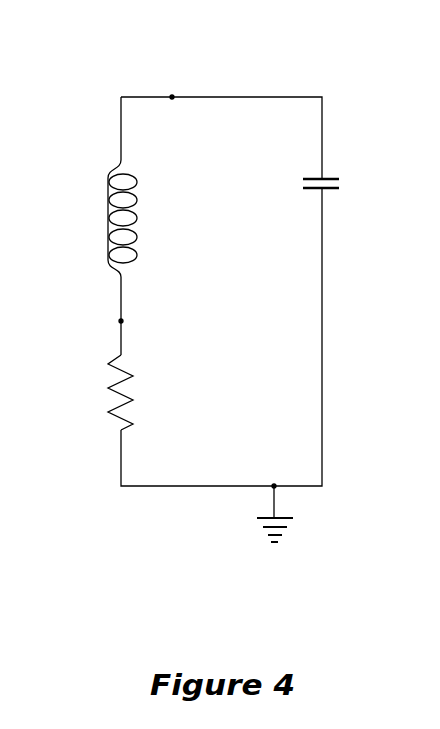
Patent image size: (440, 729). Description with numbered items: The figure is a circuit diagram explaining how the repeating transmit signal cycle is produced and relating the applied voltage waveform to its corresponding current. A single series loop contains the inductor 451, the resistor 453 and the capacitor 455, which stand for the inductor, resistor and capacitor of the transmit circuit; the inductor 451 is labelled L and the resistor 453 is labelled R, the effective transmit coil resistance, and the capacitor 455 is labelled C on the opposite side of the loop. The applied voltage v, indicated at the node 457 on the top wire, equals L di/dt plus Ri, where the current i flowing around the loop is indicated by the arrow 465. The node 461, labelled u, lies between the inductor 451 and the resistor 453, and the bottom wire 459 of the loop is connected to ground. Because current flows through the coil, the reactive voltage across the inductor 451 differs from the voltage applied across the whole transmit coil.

The inductor 451 is at (108, 225).
The resistor 453 is at (108, 388).
The capacitor 455 is at (333, 179).
The voltage node v 457 is at (172, 97).
The ground / bottom wire 459 is at (207, 486).
The node u 461 is at (121, 321).
The current i 465 is at (224, 97).